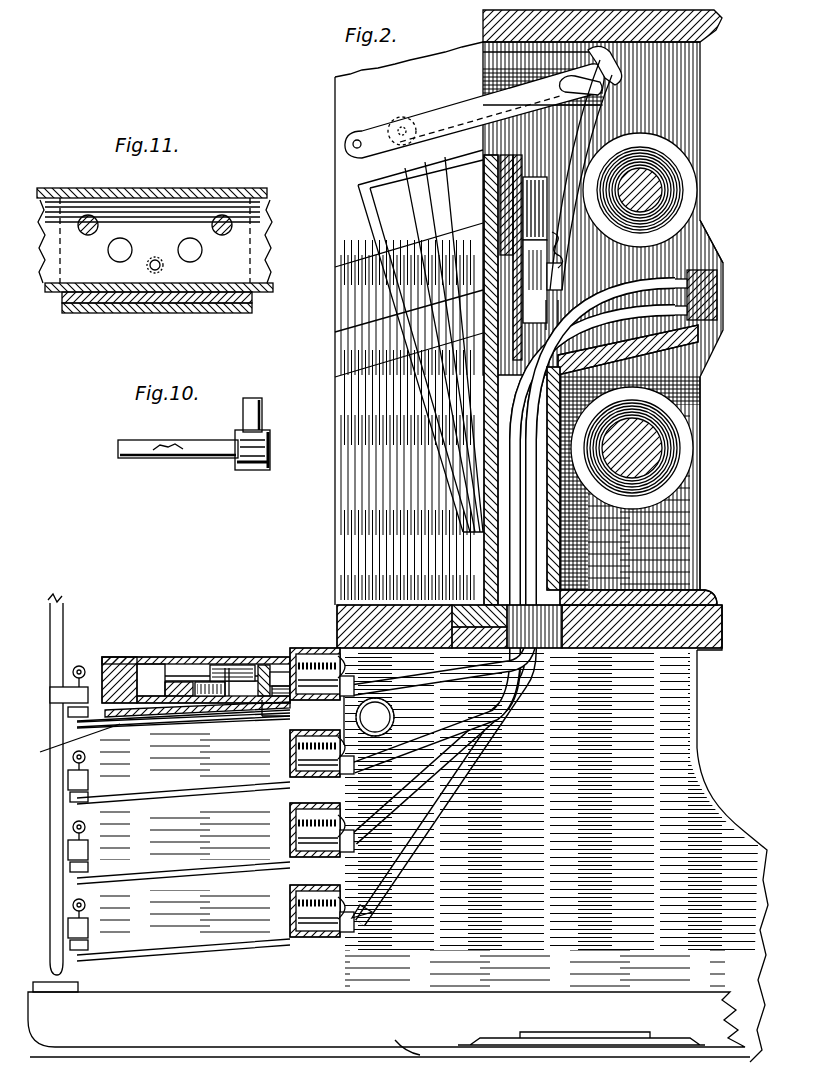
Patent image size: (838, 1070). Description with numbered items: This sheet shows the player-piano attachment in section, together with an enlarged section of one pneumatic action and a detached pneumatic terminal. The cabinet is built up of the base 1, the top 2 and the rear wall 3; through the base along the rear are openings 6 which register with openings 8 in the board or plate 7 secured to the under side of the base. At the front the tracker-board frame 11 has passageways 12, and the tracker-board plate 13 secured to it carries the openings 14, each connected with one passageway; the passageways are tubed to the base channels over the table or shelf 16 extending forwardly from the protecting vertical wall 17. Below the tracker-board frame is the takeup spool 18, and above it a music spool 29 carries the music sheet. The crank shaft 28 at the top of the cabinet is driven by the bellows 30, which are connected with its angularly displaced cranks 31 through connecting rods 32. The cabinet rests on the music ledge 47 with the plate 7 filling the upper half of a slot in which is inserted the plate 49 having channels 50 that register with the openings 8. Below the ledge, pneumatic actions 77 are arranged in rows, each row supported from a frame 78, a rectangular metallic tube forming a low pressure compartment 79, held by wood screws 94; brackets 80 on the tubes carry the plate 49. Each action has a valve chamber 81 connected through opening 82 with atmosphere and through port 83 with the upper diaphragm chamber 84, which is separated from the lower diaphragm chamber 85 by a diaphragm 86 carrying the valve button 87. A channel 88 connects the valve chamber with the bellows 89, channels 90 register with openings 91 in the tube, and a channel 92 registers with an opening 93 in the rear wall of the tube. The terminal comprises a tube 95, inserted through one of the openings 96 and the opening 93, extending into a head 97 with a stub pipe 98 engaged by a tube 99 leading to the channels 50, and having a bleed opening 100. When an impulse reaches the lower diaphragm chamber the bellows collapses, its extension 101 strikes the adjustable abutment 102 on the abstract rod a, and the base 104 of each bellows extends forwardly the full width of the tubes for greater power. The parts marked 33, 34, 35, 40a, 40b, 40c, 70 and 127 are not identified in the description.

In FIG. 2, the top 2 is at (705, 24).
In FIG. 2, the angularly displaced cranks 31 is at (487, 54).
In FIG. 2, the connecting rods 32 is at (436, 115).
In FIG. 2, the crank shaft 28 is at (593, 87).
In FIG. 2, the link 40b is at (560, 163).
In FIG. 2, the link 40a is at (560, 197).
In FIG. 2, the link 40c is at (507, 322).
In FIG. 2, the spool 29 is at (647, 193).
In FIG. 2, the plate 34 is at (525, 192).
In FIG. 2, the hopper wall 33 is at (348, 268).
In FIG. 2, the plate 35 is at (510, 282).
In FIG. 2, the bellows 30 is at (395, 322).
In FIG. 2, the tracker-board frame 11 is at (693, 270).
In FIG. 2, the tracker-board plate 13 is at (718, 280).
In FIG. 2, the openings 14 is at (720, 298).
In FIG. 2, the passageways 12 is at (718, 313).
In FIG. 2, the table or shelf 16 is at (660, 348).
In FIG. 2, the takeup spool 18 is at (652, 462).
In FIG. 2, the protecting vertical wall 17 is at (570, 548).
In FIG. 2, the housing 70 is at (678, 530).
In FIG. 2, the openings 6 is at (575, 590).
In FIG. 2, the openings 8 is at (605, 592).
In FIG. 2, the base 1 is at (703, 593).
In FIG. 2, the music ledge or shelf 47 is at (707, 630).
In FIG. 2, the plate 49 is at (557, 648).
In FIG. 2, the channels 50 is at (553, 650).
In FIG. 2, the wood screws 94 is at (372, 630).
In FIG. 11, the wood screws 94 is at (235, 224).
In FIG. 2, the rear wall 3 is at (493, 553).
In FIG. 2, the board or plate 7 is at (463, 613).
In FIG. 2, the valve button 87 is at (238, 662).
In FIG. 2, the bleed or equalizing opening 100 is at (315, 665).
In FIG. 10, the bleed or equalizing opening 100 is at (168, 458).
In FIG. 2, the openings 96 is at (312, 633).
In FIG. 2, the channel 88 is at (147, 693).
In FIG. 2, the port 83 is at (180, 677).
In FIG. 2, the valve chamber 81 is at (187, 667).
In FIG. 2, the opening 82 is at (230, 655).
In FIG. 2, the upper diaphragm chamber 84 is at (267, 652).
In FIG. 2, the channels 90 is at (292, 660).
In FIG. 2, the adjustable abutment 102 is at (70, 700).
In FIG. 2, the extension 101 is at (100, 727).
In FIG. 11, the extension 101 is at (232, 300).
In FIG. 2, the bellows 89 is at (60, 745).
In FIG. 2, the base 104 is at (180, 703).
In FIG. 11, the base 104 is at (85, 300).
In FIG. 2, the diaphragm 86 is at (217, 707).
In FIG. 2, the lower diaphragm chamber 85 is at (227, 693).
In FIG. 2, the channel 92 is at (273, 720).
In FIG. 2, the pneumatic actions 77 is at (123, 816).
In FIG. 2, the abstract rods a is at (55, 872).
In FIG. 2, the brackets 80 is at (433, 650).
In FIG. 2, the tubes 99 is at (437, 823).
In FIG. 2, the head 97 is at (397, 875).
In FIG. 10, the head 97 is at (268, 453).
In FIG. 2, the tube 127 is at (458, 640).
In FIG. 2, the low pressure compartment 79 is at (340, 918).
In FIG. 2, the frame 78 is at (321, 937).
In FIG. 11, the frame 78 is at (240, 190).
In FIG. 11, the openings 91 is at (118, 262).
In FIG. 11, the opening 93 is at (153, 274).
In FIG. 10, the stub pipe 98 is at (262, 410).
In FIG. 10, the tube 95 is at (205, 455).